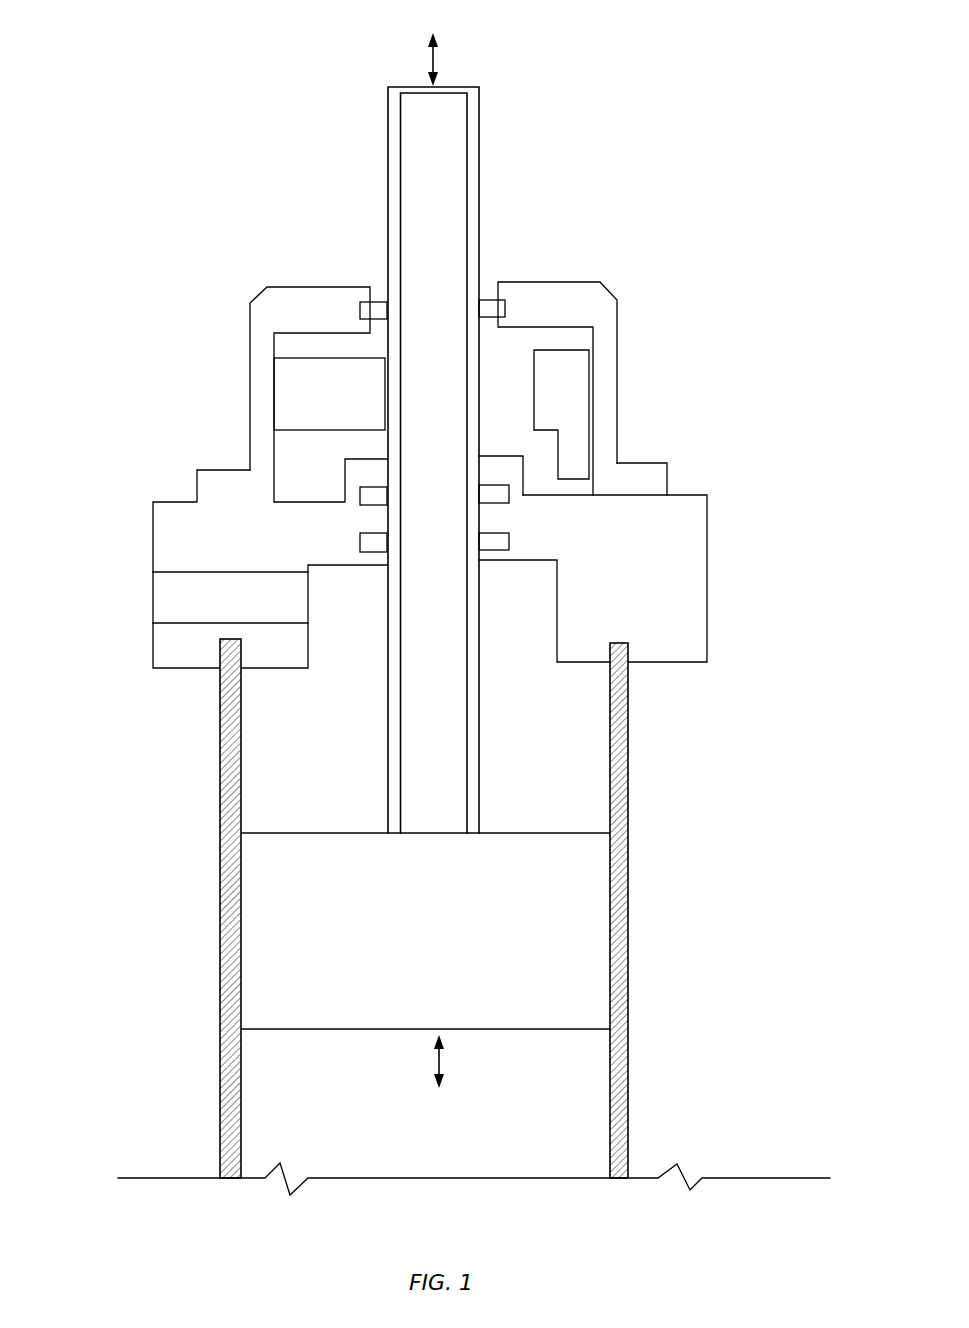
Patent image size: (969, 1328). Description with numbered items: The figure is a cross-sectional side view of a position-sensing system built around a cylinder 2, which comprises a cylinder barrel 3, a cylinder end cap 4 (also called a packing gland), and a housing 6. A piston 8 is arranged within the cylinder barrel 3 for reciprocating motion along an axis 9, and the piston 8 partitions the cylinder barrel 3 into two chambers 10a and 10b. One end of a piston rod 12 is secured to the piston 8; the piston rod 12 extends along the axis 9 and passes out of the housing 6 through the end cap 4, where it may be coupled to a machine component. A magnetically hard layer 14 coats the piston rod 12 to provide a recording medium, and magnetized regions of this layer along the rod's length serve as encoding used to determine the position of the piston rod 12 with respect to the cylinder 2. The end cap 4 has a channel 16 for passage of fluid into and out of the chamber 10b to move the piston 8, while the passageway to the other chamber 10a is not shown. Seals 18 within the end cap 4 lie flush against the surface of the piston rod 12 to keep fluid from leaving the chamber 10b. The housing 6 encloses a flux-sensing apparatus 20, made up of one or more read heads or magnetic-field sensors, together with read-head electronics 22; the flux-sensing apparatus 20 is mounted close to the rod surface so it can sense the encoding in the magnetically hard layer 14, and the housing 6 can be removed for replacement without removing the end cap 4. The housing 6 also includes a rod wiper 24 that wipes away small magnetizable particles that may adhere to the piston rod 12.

The cylinder 2 is at (70, 242).
The cylinder barrel 3 is at (219, 977).
The cylinder end cap 4 is at (207, 555).
The housing 6 is at (270, 309).
The piston 8 is at (427, 958).
The axis 9 is at (436, 63).
The chamber 10a is at (303, 1125).
The chamber 10b is at (303, 755).
The piston rod 12 is at (420, 196).
The magnetically hard layer 14 is at (395, 148).
The channel 16 is at (172, 595).
The seals 18 is at (378, 545).
The flux-sensing apparatus 20 is at (318, 403).
The read-head electronics 22 is at (549, 411).
The rod wiper 24 is at (382, 310).